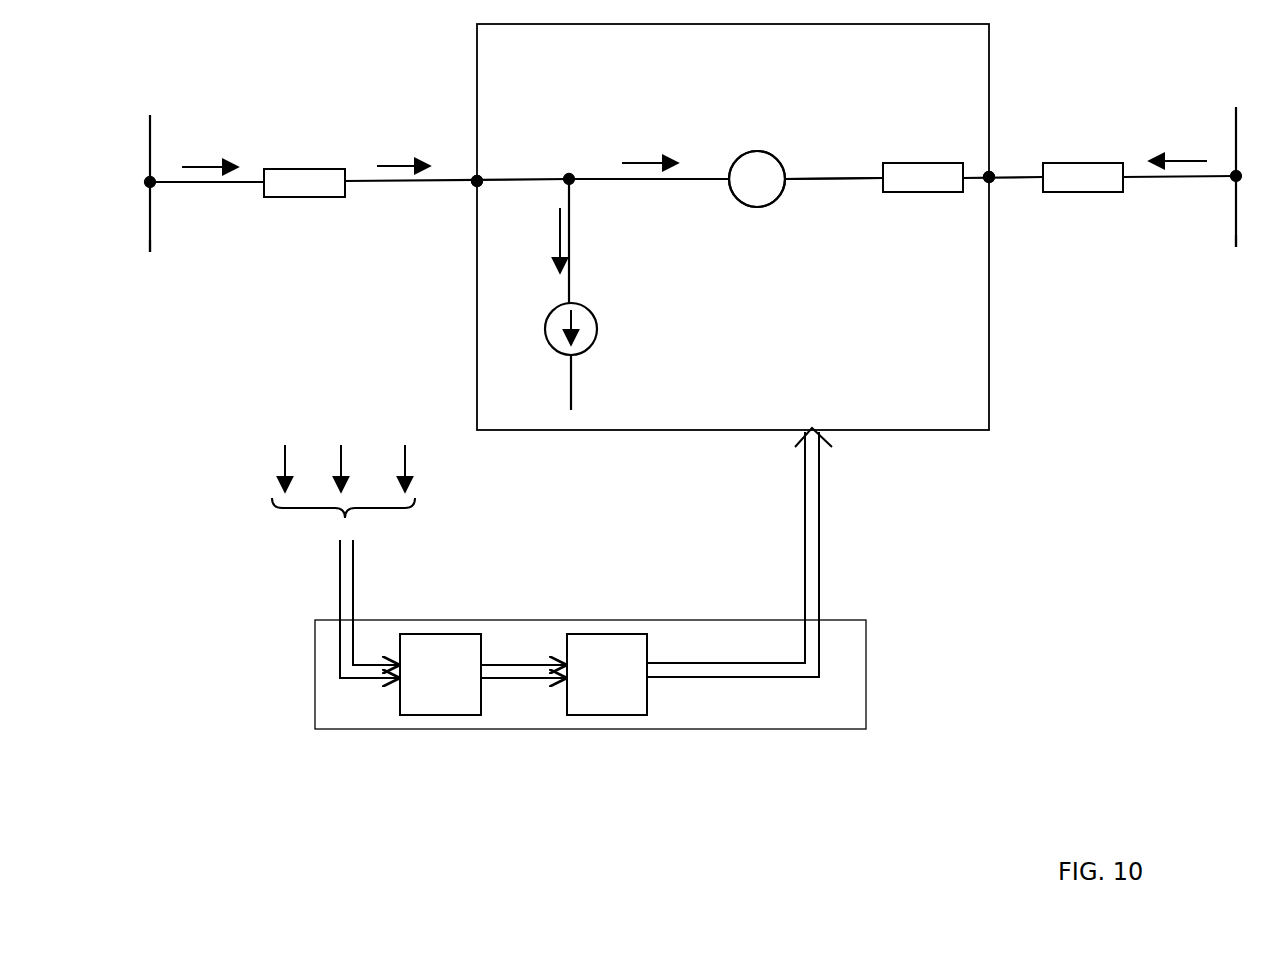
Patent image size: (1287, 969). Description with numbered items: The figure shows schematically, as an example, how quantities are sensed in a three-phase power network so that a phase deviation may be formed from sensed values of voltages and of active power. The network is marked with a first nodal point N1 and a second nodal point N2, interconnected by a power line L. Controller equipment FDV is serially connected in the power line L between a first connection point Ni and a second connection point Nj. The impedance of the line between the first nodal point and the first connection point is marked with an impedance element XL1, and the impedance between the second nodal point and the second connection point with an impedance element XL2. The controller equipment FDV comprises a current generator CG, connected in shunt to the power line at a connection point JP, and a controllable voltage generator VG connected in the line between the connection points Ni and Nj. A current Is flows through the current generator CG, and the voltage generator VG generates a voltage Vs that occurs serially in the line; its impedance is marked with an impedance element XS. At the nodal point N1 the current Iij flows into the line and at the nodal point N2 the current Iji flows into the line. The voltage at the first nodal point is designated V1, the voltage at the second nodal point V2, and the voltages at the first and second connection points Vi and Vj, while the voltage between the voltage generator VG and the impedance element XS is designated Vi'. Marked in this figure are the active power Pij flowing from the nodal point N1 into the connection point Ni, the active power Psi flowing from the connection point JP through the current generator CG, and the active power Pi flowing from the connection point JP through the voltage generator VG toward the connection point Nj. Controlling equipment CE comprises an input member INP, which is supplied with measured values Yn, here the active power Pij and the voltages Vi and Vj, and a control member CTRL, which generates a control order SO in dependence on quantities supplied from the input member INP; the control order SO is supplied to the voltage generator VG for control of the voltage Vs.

The first nodal point N1 is at (149, 137).
The voltage at the first nodal point V1 is at (158, 263).
The current flowing into the power line at the first nodal point Iij is at (192, 122).
The power line L is at (193, 182).
The impedance element XL1 is at (305, 168).
The active power Pij is at (400, 147).
The first connection point Ni is at (477, 181).
The voltage at the first connection point Vi is at (448, 237).
The connection point JP is at (569, 179).
The active power Pi is at (647, 144).
The active power Psi is at (543, 241).
The controllable voltage generator VG is at (757, 151).
The voltage generated by the voltage generator Vs is at (764, 220).
The voltage between the voltage generator and the impedance element XS Vi' is at (834, 217).
The impedance element XS is at (924, 163).
The second connection point Nj is at (989, 177).
The voltage at the second connection point Vj is at (989, 177).
The impedance element XL2 is at (1083, 163).
The current flowing into the power line at the second nodal point Iji is at (1192, 117).
The second nodal point N2 is at (1238, 128).
The voltage at the second nodal point V2 is at (1244, 256).
The current generator CG is at (545, 328).
The current through the current generator Is is at (620, 312).
The controller equipment FDV is at (990, 312).
The measured values Yn is at (330, 561).
The controlling equipment CE is at (866, 671).
The input member INP is at (440, 715).
The control member CTRL is at (607, 715).
The control order SO is at (787, 552).